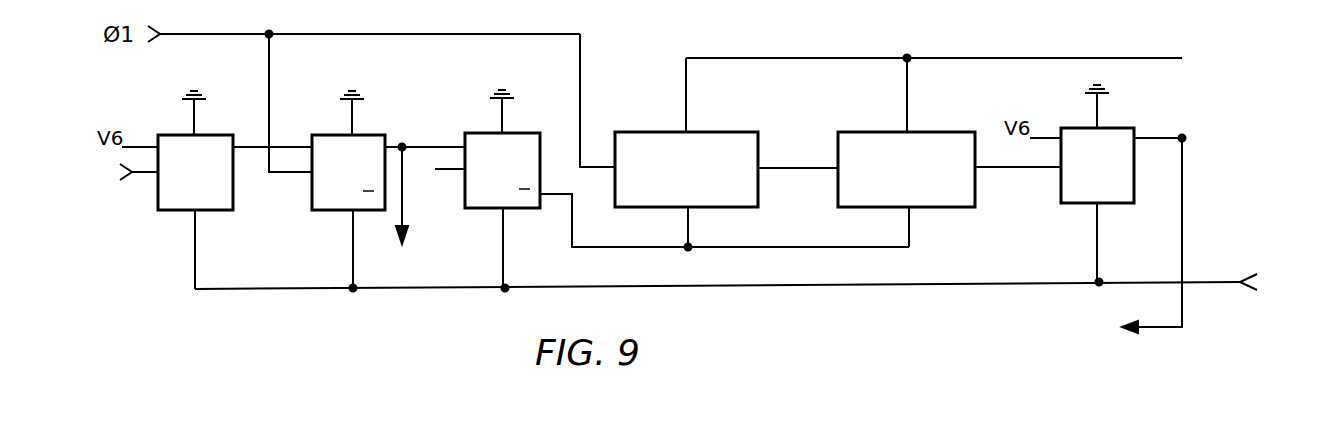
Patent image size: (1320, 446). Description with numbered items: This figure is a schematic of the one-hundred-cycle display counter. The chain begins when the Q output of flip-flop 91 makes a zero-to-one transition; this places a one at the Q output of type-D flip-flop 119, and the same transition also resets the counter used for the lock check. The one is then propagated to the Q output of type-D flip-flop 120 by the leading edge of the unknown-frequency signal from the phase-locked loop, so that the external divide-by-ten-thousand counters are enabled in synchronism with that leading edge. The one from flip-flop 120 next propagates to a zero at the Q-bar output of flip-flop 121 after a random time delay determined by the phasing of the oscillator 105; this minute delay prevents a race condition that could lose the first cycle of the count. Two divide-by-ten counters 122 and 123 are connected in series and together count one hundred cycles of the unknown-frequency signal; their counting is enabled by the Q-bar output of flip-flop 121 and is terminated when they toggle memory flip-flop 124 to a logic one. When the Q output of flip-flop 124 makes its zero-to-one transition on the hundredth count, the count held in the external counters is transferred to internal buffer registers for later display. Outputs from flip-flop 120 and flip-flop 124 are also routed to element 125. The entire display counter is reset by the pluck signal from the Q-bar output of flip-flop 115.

The flip-flop 91 is at (113, 176).
The 10^5 Hz oscillator 105 is at (442, 183).
The pluck signal flip-flop 115 is at (1314, 273).
The type-D flip-flop 119 is at (212, 192).
The type-D flip-flop 120 is at (366, 182).
The flip-flop 121 is at (520, 184).
The divide-by-ten counter 122 is at (704, 181).
The divide-by-ten counter 123 is at (925, 181).
The memory flip-flop 124 is at (1115, 178).
The circuit connection to element 125 is at (780, 238).